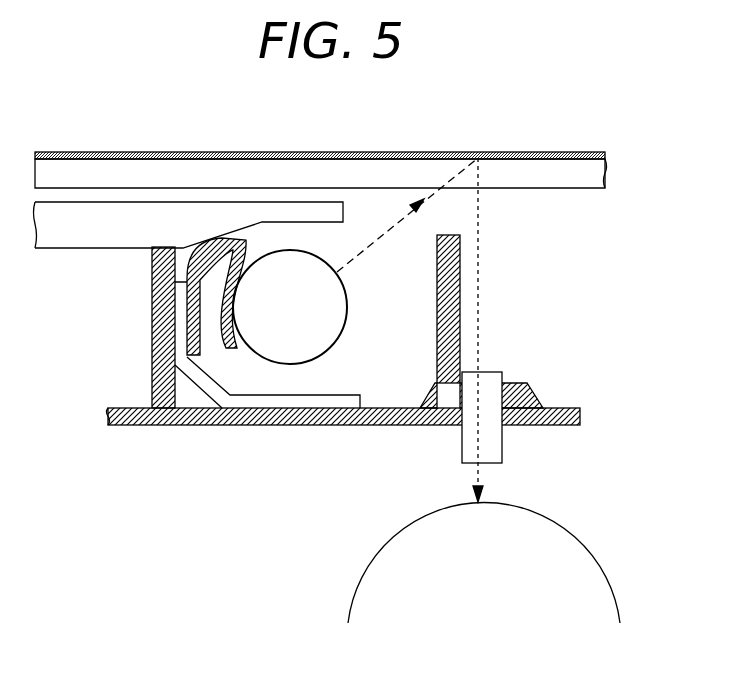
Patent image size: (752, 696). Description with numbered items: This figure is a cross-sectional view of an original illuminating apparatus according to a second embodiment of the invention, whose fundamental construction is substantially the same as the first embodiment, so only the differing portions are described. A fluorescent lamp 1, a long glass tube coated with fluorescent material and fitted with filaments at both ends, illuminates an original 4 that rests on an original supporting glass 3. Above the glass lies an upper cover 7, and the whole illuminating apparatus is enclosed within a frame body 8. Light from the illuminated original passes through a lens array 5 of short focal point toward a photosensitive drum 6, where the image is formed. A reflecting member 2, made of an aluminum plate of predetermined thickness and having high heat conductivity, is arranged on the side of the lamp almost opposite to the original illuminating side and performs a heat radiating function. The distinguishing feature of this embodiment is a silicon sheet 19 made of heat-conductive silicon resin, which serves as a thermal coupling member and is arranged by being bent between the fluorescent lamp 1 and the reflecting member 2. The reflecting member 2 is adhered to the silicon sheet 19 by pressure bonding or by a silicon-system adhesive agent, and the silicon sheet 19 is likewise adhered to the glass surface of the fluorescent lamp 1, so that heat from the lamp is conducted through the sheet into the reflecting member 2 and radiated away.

The fluorescent lamp 1 is at (322, 332).
The reflecting member 2 is at (263, 398).
The original supporting glass 3 is at (525, 173).
The original 4 is at (560, 152).
The lens array 5 is at (490, 380).
The photosensitive drum 6 is at (568, 518).
The upper cover 7 is at (88, 233).
The frame body 8 is at (123, 427).
The silicon sheet 19 is at (242, 237).